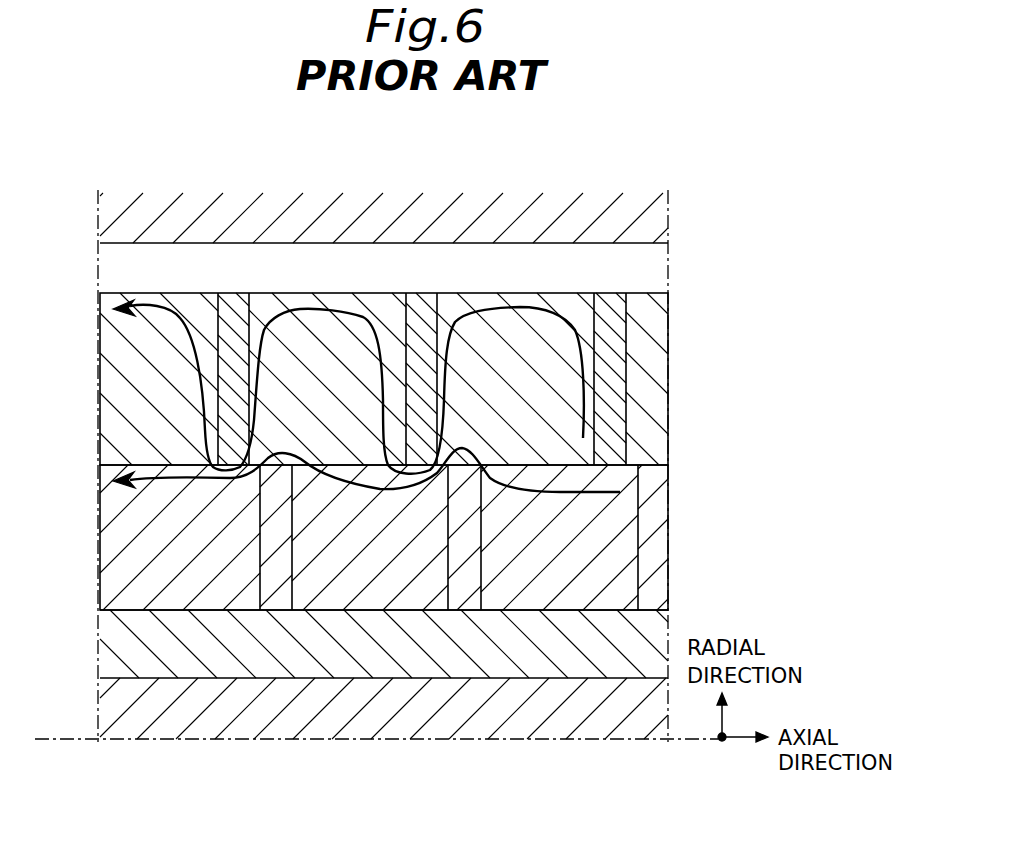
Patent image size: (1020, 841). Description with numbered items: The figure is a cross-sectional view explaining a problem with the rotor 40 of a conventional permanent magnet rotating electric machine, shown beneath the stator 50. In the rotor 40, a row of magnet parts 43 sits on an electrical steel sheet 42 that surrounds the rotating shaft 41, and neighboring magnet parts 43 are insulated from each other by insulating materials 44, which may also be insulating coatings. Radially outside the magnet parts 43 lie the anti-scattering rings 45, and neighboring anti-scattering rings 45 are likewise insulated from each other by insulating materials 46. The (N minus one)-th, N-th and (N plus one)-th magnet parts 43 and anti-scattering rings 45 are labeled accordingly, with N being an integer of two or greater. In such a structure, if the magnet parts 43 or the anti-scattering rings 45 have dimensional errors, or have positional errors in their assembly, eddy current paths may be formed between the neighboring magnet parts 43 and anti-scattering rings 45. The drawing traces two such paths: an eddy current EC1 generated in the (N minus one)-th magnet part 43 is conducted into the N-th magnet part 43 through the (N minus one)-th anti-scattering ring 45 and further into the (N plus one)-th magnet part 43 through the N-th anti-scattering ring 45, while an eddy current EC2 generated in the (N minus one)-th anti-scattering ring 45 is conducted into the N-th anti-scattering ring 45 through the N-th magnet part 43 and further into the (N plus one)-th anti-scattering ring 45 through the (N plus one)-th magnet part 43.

The rotor 40 is at (712, 462).
The stator 50 is at (650, 220).
The anti-scattering ring 45 is at (182, 307).
The insulating material 46 is at (237, 307).
The magnet part 43 is at (200, 592).
The insulating material 44 is at (277, 592).
The electrical steel sheet 42 is at (118, 645).
The rotating shaft 41 is at (118, 710).
The eddy current EC1 is at (583, 493).
The eddy current EC2 is at (553, 307).